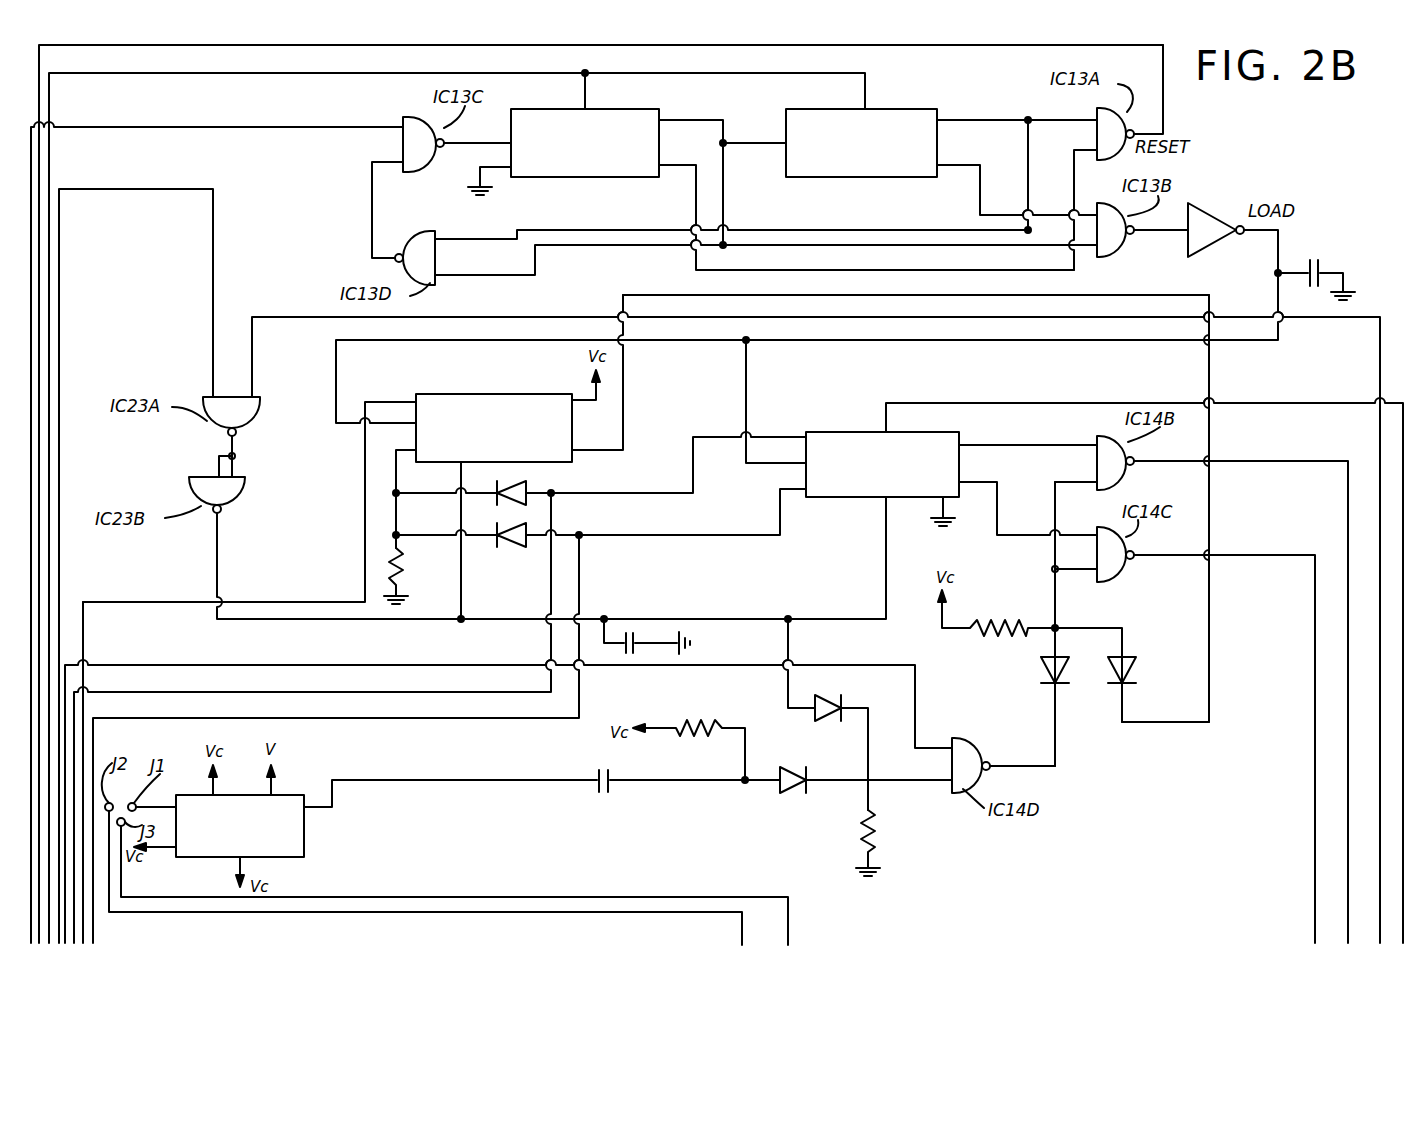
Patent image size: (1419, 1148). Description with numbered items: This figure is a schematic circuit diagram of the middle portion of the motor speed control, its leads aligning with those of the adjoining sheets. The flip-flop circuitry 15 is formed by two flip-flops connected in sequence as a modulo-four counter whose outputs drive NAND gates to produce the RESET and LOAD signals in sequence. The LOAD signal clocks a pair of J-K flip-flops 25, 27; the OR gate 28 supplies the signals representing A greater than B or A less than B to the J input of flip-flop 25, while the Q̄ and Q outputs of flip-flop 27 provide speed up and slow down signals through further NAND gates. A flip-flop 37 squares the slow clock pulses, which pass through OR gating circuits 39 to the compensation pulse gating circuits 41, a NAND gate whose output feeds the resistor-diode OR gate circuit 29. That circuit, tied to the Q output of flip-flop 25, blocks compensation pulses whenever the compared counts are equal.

The flip-flop circuitry 15 is at (580, 177).
The J-K flip-flop 25 is at (520, 393).
The J-K flip-flop 27 is at (928, 432).
The OR gate 28 is at (595, 518).
The resistor-diode OR gate circuit 29 is at (1037, 678).
The flip-flop 37 is at (293, 857).
The OR gating circuit 39 is at (840, 752).
The compensation pulse gating circuit 41 is at (879, 766).